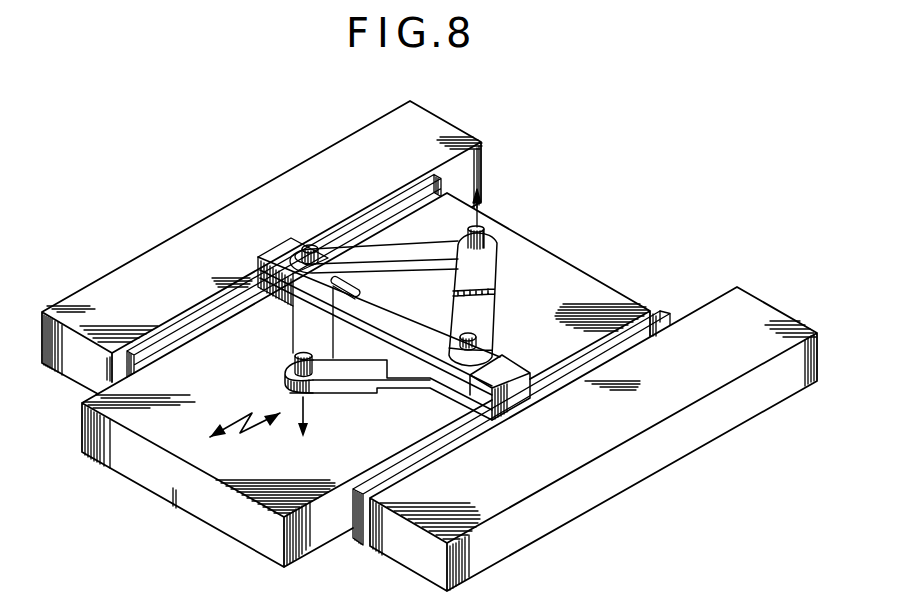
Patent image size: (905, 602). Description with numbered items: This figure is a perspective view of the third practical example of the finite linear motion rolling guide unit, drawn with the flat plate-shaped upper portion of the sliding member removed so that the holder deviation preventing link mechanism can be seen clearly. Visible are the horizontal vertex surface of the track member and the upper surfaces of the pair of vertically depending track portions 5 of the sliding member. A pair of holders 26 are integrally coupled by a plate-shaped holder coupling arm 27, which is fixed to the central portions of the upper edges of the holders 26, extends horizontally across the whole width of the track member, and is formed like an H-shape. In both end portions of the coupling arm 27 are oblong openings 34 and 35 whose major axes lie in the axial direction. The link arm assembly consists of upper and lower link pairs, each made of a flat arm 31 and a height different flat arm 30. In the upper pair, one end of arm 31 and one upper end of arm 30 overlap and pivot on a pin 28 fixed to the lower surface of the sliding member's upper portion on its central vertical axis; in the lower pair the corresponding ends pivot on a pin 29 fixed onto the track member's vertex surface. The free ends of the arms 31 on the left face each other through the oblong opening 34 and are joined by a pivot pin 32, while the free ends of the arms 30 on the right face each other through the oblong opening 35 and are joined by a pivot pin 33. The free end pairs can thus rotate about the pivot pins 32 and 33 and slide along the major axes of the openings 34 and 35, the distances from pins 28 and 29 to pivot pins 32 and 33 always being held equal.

The vertically depending track portion 5 is at (456, 137).
The holder 26 is at (423, 192).
The holder coupling arm 27 is at (378, 313).
The pin on the sliding member side 28 is at (485, 230).
The pin on the track member side 29 is at (295, 358).
The height different flat arm 30 is at (493, 274).
The flat arm 31 is at (411, 253).
The pivot pin 32 is at (311, 246).
The pivot pin 33 is at (459, 331).
The oblong opening 34 is at (333, 284).
The oblong opening 35 is at (485, 364).